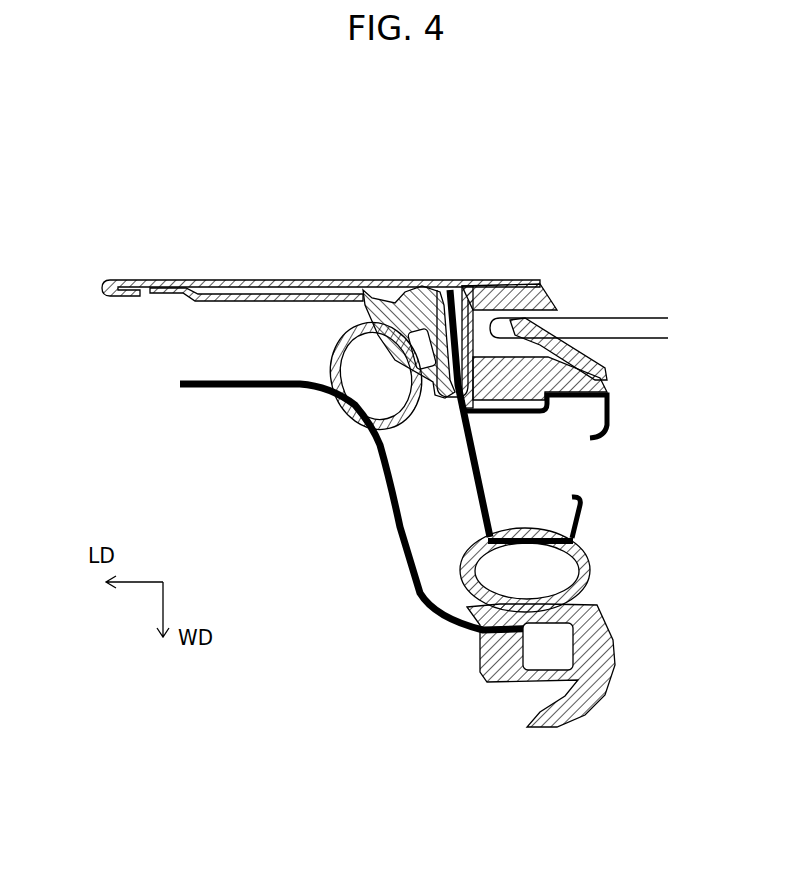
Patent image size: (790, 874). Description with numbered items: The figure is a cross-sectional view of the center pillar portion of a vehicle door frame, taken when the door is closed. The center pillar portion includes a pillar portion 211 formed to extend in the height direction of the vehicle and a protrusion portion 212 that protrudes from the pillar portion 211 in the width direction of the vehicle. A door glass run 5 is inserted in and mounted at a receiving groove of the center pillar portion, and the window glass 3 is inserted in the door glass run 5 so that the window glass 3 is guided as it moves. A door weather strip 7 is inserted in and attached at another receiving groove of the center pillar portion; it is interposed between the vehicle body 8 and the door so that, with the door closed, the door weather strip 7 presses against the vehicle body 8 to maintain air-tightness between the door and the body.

The pillar portion 211 is at (318, 279).
The protrusion portion 212 is at (483, 470).
The window glass 3 is at (621, 318).
The door glass run 5 is at (606, 378).
The door weather strip 7 is at (345, 430).
The vehicle body 8 is at (221, 390).